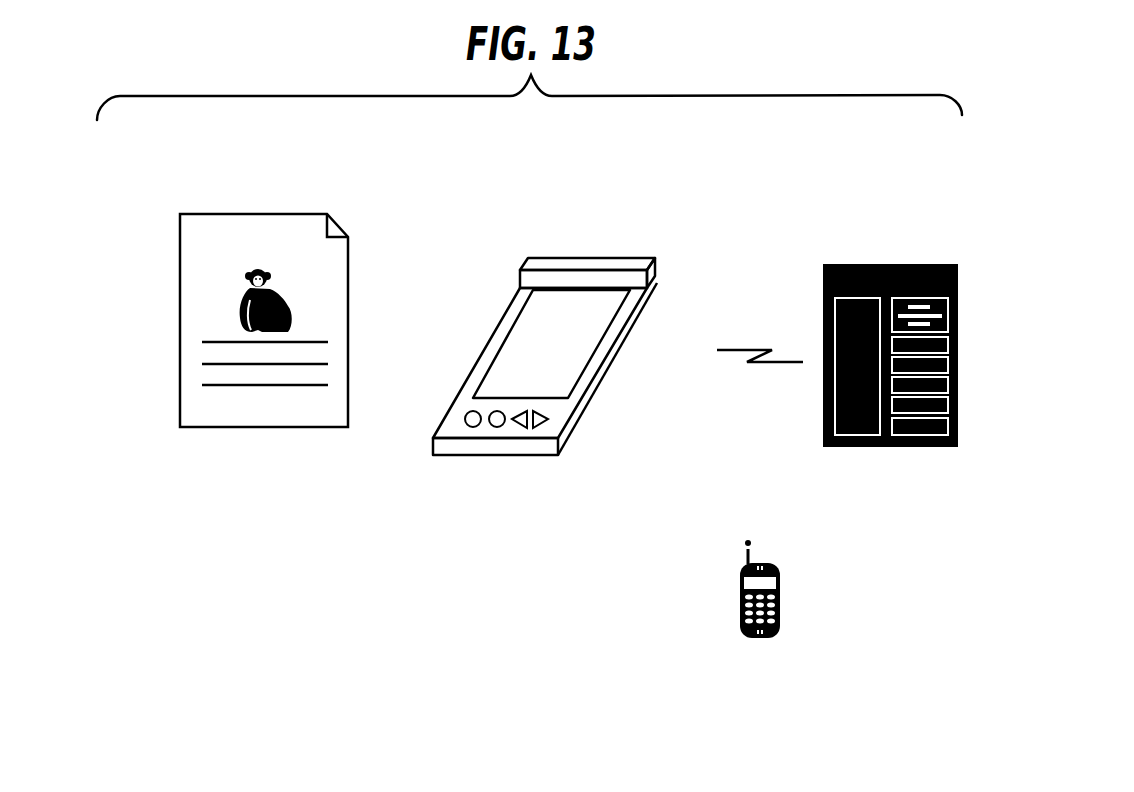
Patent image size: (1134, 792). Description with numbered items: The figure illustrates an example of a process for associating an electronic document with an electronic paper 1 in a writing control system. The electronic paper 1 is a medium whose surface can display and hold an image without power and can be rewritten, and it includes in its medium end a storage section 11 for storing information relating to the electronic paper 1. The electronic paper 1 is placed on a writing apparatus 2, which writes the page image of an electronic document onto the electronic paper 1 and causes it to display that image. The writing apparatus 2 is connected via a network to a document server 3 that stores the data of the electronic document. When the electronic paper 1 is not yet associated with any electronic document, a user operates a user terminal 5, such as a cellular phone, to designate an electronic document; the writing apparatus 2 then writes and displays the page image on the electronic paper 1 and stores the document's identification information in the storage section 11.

The electronic paper 1 is at (156, 307).
The storage section 11 is at (261, 214).
The writing apparatus 2 is at (589, 258).
The document server 3 is at (894, 264).
The user terminal 5 is at (765, 562).